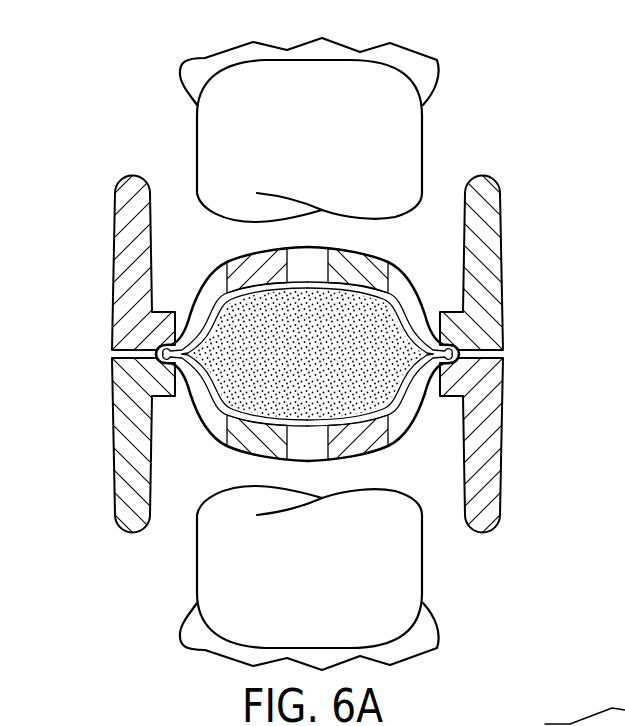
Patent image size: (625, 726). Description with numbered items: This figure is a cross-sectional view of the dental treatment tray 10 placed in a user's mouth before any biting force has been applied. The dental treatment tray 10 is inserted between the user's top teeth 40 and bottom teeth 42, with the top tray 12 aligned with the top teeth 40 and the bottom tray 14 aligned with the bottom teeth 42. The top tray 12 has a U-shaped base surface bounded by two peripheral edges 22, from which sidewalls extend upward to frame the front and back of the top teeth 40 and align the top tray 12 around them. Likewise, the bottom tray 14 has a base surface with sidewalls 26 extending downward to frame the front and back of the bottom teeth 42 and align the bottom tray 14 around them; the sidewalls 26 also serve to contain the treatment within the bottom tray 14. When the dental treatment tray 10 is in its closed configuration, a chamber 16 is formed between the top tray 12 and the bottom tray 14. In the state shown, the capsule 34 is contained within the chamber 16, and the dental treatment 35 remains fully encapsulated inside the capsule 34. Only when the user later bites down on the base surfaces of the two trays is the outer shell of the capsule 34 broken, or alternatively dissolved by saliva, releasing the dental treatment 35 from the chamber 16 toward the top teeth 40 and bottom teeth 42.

The dental treatment tray 10 is at (334, 318).
The top tray 12 is at (525, 256).
The bottom tray 14 is at (525, 461).
The chamber 16 is at (233, 400).
The peripheral edges 22 is at (480, 283).
The sidewalls 26 is at (483, 438).
The capsule 34 is at (383, 342).
The dental treatment 35 is at (232, 336).
The top teeth 40 is at (343, 142).
The bottom teeth 42 is at (370, 537).